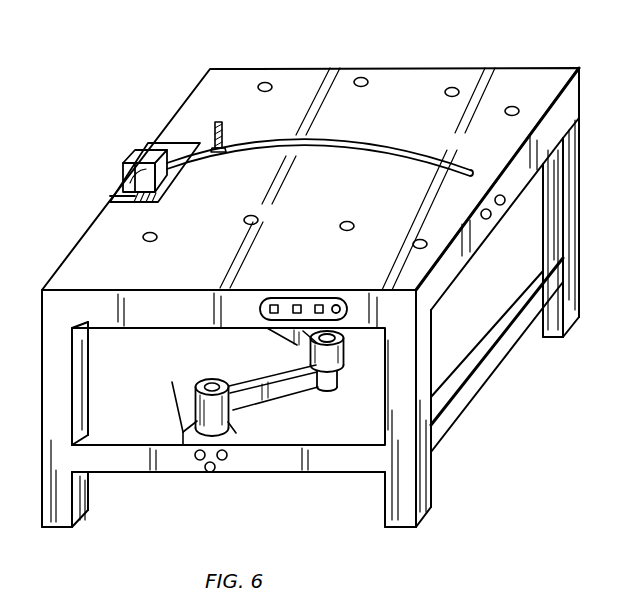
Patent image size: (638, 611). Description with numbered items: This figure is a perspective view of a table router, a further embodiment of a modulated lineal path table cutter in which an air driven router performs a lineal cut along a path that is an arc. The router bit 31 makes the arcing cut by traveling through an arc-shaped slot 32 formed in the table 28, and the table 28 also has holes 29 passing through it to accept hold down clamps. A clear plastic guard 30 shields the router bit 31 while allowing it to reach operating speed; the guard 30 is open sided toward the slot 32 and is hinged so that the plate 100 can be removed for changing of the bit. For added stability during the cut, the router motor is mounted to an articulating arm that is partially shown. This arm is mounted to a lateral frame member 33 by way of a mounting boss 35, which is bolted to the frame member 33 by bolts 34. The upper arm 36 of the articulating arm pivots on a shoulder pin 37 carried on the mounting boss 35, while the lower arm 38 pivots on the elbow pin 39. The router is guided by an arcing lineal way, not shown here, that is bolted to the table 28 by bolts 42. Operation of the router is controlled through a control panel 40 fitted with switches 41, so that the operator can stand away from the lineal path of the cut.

The table 28 is at (513, 75).
The holes 29 is at (268, 83).
The clear plastic guard 30 is at (124, 172).
The router bit 31 is at (224, 126).
The slot 32 is at (363, 140).
The lateral frame member 33 is at (285, 470).
The bolts 34 is at (223, 474).
The mounting boss 35 is at (183, 431).
The upper arm 36 is at (196, 392).
The shoulder pin 37 is at (213, 385).
The lower arm 38 is at (290, 345).
The elbow pin 39 is at (343, 340).
The control panel 40 is at (321, 300).
The switches 41 is at (317, 303).
The bolts 42 is at (500, 206).
The plate 100 is at (177, 142).